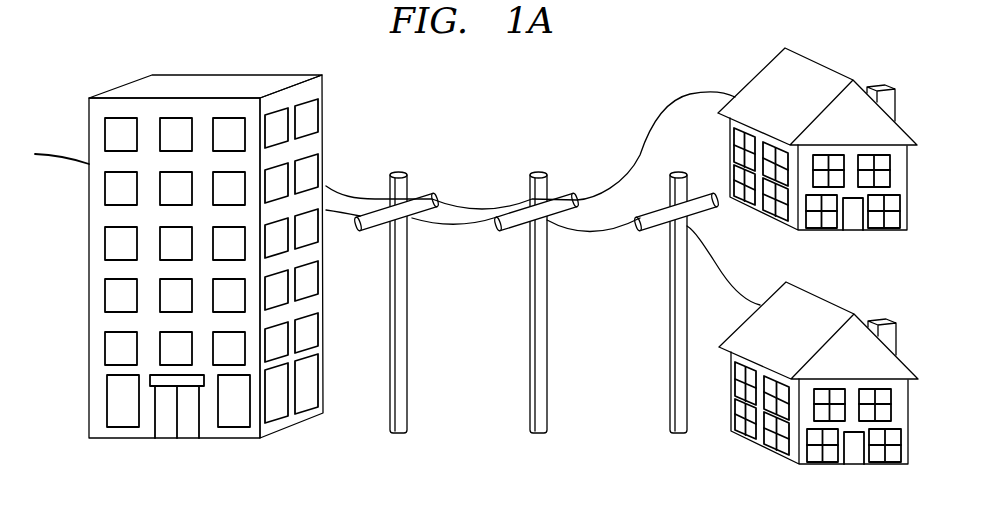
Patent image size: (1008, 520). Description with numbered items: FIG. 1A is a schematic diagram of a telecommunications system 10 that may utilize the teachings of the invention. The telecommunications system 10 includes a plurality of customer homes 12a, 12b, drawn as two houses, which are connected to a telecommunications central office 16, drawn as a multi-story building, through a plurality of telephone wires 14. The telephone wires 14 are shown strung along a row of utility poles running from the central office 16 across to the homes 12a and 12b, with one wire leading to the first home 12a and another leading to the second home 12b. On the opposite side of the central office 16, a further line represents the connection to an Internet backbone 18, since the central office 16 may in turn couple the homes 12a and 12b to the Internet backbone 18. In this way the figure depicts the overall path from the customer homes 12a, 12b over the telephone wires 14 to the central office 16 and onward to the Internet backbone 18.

The telecommunications system 10 is at (584, 100).
The customer home 12a is at (817, 63).
The customer home 12b is at (818, 297).
The telephone wires 14 is at (460, 206).
The telecommunications central office 16 is at (200, 82).
The Internet backbone 18 is at (68, 163).